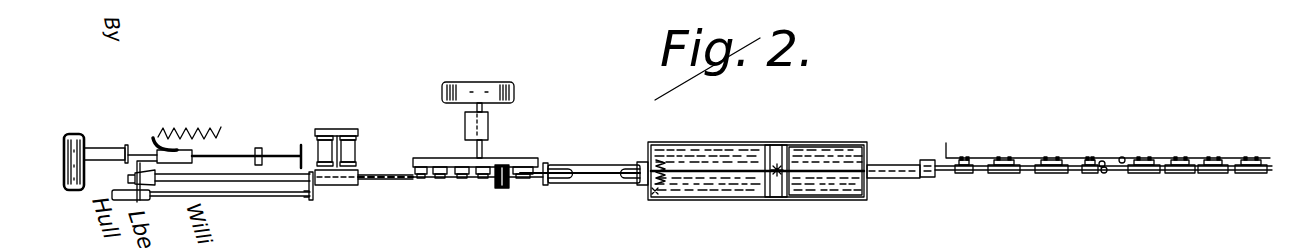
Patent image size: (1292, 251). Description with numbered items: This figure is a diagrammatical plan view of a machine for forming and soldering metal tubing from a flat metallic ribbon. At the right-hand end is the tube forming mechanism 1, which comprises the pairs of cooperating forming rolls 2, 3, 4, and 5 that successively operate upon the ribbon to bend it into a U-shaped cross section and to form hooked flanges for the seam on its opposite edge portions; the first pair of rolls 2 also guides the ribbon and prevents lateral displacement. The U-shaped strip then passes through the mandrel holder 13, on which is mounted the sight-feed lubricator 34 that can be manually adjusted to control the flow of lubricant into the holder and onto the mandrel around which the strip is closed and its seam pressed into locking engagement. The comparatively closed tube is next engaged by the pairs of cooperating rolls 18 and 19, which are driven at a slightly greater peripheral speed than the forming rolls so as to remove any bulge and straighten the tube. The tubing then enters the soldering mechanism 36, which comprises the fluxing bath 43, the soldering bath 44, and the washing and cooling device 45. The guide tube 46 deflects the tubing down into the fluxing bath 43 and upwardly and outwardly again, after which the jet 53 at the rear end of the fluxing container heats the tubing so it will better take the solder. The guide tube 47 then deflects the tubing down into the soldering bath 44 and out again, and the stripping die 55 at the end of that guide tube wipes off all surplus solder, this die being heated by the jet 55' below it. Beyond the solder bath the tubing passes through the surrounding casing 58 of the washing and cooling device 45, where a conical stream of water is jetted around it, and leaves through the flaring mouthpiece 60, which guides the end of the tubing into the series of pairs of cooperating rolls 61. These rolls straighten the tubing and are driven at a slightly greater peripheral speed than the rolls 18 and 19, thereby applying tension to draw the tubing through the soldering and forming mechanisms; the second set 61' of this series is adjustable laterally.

The tube forming mechanism 1 is at (980, 142).
The pair of cooperating forming rolls 2 is at (1253, 172).
The pair of cooperating forming rolls 3 is at (1215, 172).
The pair of cooperating forming rolls 4 is at (1180, 173).
The pair of cooperating forming rolls 5 is at (1150, 173).
The mandrel holder 13 is at (1095, 173).
The pair of cooperating rolls 18 is at (1057, 173).
The pair of cooperating rolls 19 is at (1020, 173).
The lubricator 34 is at (1123, 157).
The soldering mechanism 36 is at (800, 205).
The fluxing bath 43 is at (827, 187).
The soldering bath 44 is at (705, 188).
The washing and cooling device 45 is at (568, 188).
The guide tube 46 is at (828, 167).
The guide tube 47 is at (723, 173).
The jet 53 is at (778, 167).
The stripping die 55 is at (662, 147).
The jet 55' is at (640, 218).
The casing 58 is at (601, 165).
The flaring mouthpiece 60 is at (548, 187).
The series of pairs of cooperating rolls 61 is at (474, 194).
The second set of rolls 61' is at (509, 200).